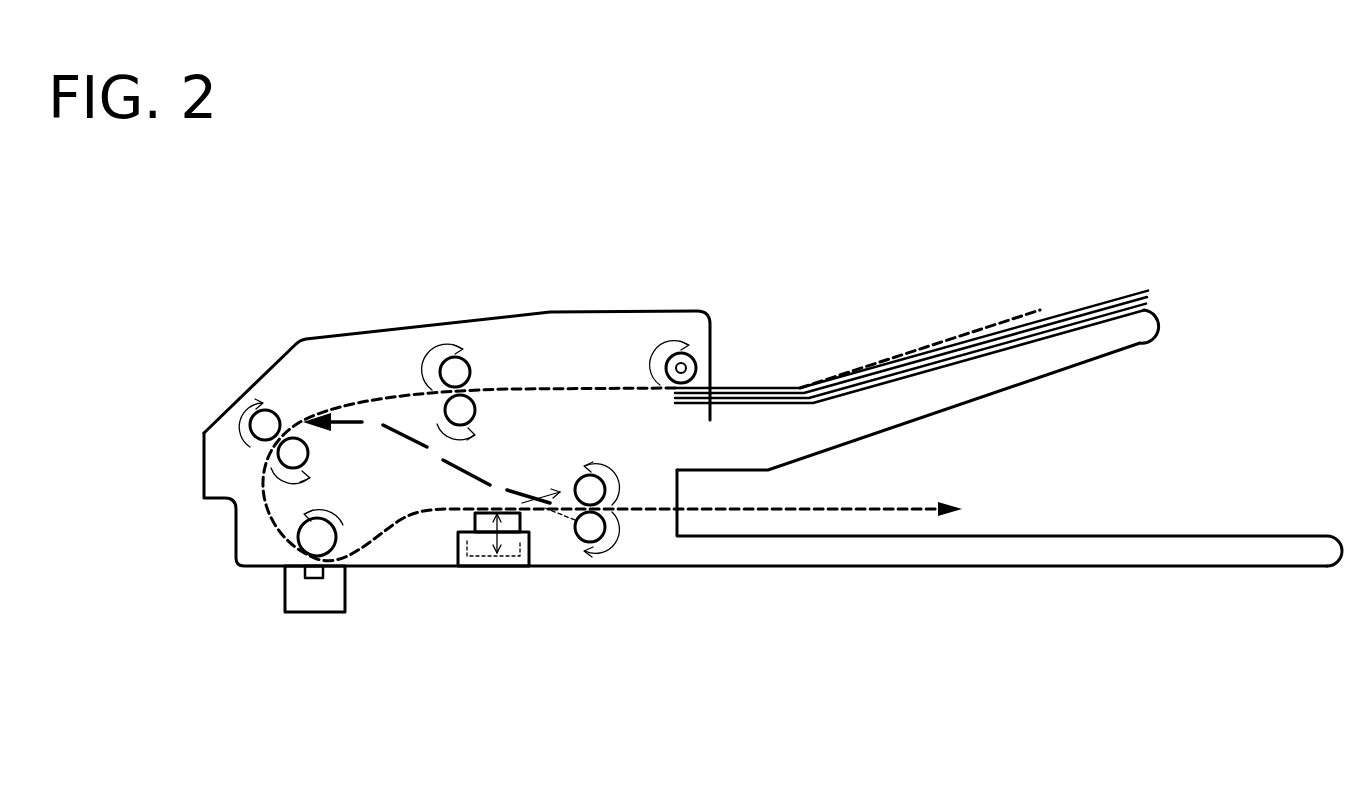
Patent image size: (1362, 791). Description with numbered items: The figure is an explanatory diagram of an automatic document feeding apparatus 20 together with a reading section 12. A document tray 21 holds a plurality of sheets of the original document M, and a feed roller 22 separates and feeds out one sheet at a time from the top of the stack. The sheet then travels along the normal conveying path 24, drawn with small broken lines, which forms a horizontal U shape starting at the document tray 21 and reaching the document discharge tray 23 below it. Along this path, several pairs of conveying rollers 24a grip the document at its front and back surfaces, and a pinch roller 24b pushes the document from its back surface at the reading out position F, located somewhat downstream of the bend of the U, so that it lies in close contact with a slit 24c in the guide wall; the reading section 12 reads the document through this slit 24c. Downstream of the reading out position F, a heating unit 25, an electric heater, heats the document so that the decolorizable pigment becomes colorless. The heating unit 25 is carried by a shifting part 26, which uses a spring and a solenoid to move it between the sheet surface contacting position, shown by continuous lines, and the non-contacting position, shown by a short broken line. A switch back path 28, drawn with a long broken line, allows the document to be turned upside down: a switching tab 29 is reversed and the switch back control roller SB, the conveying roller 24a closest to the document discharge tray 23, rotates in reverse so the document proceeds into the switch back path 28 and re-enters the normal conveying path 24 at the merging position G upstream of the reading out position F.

The reading section 12 is at (320, 613).
The automatic document feeding apparatus 20 is at (607, 310).
The document tray 21 is at (1120, 327).
The feed roller 22 is at (690, 353).
The document discharge tray 23 is at (1103, 535).
The normal conveying path 24 is at (482, 398).
The conveying rollers 24a is at (466, 464).
The pinch roller 24b is at (298, 537).
The slit 24c is at (372, 609).
The heating unit 25 is at (520, 517).
The shifting part 26 is at (528, 568).
The switch back path 28 is at (398, 423).
The switching tab 29 is at (540, 492).
The reading out position F is at (332, 573).
The merging position G is at (313, 412).
The original document M is at (1066, 308).
The switch back control roller SB is at (607, 500).